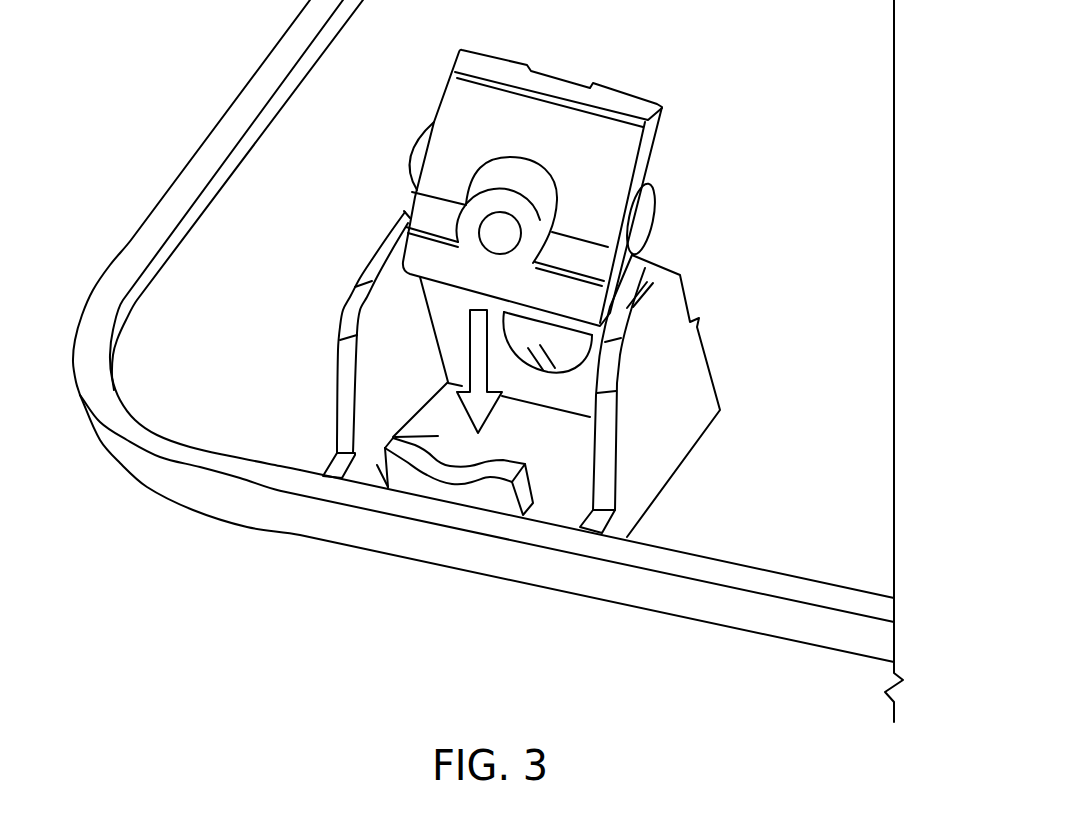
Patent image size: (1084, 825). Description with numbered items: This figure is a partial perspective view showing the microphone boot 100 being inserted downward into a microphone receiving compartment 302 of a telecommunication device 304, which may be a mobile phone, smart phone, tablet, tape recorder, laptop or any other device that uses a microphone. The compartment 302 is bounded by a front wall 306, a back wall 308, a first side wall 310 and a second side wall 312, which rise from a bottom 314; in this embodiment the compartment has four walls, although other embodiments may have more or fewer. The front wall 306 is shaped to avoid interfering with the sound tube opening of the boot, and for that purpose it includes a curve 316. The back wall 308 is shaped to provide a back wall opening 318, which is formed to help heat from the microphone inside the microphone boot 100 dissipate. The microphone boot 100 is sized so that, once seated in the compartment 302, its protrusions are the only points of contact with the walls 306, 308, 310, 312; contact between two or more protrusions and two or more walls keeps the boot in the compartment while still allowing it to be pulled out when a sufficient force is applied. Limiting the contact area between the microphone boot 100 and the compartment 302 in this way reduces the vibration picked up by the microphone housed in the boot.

The microphone boot 100 is at (549, 118).
The microphone receiving compartment 302 is at (562, 483).
The telecommunication device 304 is at (363, 58).
The front wall 306 is at (495, 494).
The back wall 308 is at (577, 390).
The first side wall 310 is at (382, 362).
The second side wall 312 is at (690, 385).
The bottom 314 is at (379, 470).
The curve 316 is at (450, 470).
The back wall opening 318 is at (573, 332).